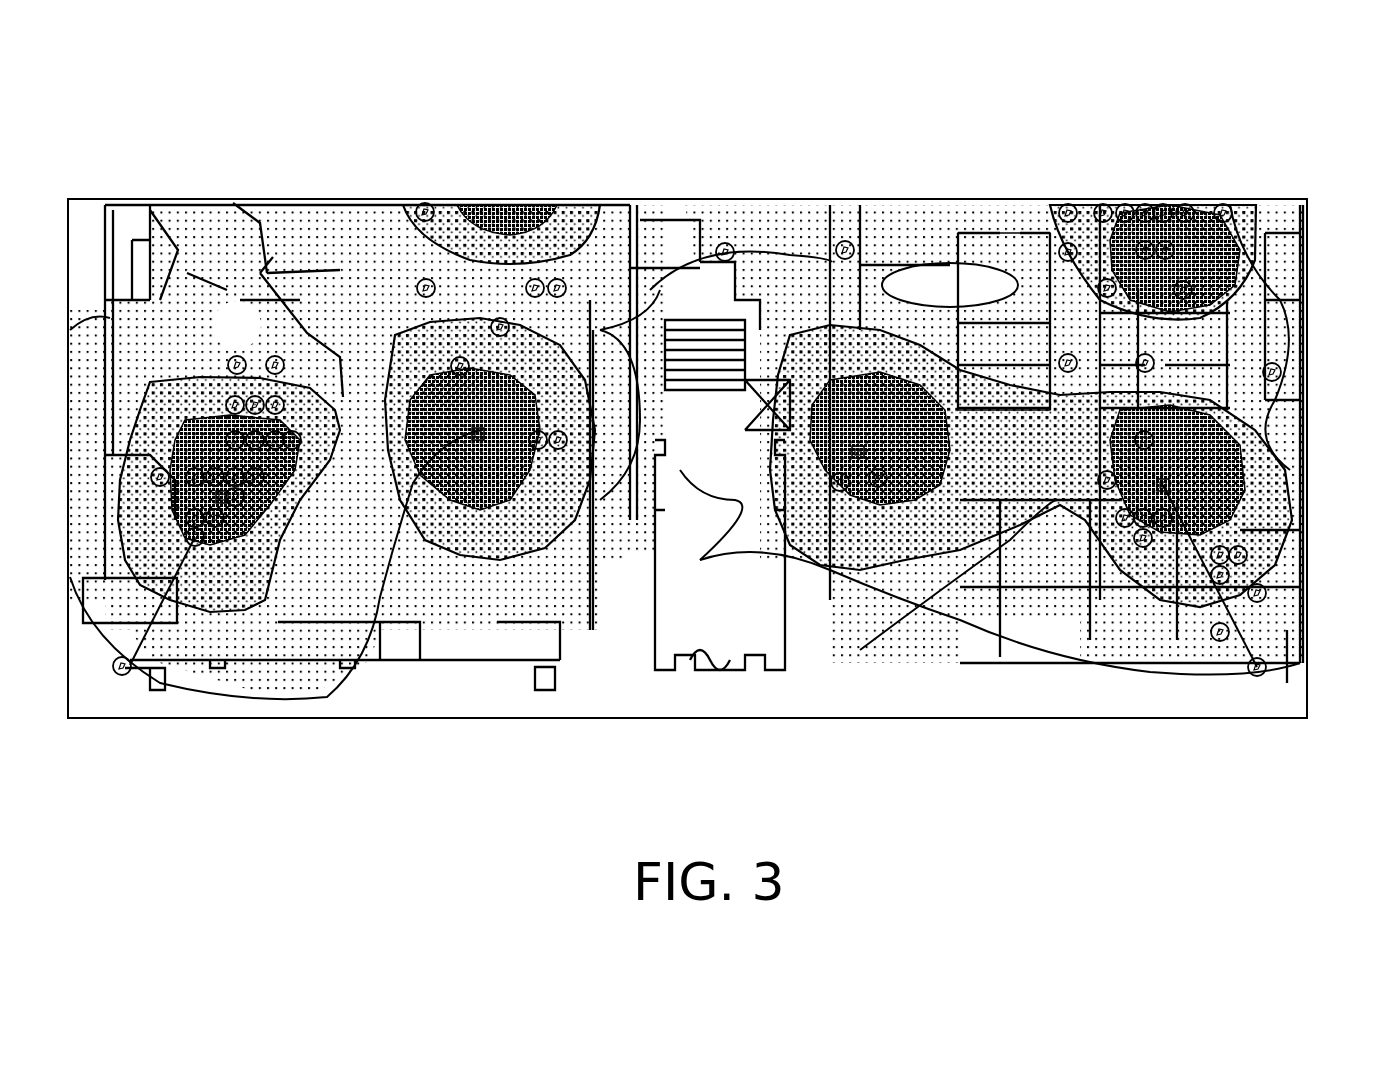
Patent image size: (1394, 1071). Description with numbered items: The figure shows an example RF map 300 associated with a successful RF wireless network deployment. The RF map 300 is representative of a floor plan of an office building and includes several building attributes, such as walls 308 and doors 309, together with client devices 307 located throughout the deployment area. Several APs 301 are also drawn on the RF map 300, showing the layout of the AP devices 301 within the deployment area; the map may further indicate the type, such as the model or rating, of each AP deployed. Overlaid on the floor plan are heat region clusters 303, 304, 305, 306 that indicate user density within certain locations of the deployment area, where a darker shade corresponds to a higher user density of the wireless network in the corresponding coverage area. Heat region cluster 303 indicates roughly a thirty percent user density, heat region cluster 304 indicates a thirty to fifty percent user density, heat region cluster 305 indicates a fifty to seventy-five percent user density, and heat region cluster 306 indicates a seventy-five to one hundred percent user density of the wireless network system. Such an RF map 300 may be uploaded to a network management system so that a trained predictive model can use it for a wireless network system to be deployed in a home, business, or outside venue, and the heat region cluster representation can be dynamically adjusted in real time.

The RF map 300 is at (115, 150).
The access points 301 is at (462, 376).
The heat region cluster 303 is at (935, 275).
The heat region cluster 304 is at (495, 572).
The heat region cluster 305 is at (490, 439).
The heat region cluster 306 is at (933, 450).
The client devices 307 is at (430, 358).
The walls 308 is at (1033, 233).
The doors 309 is at (1285, 372).